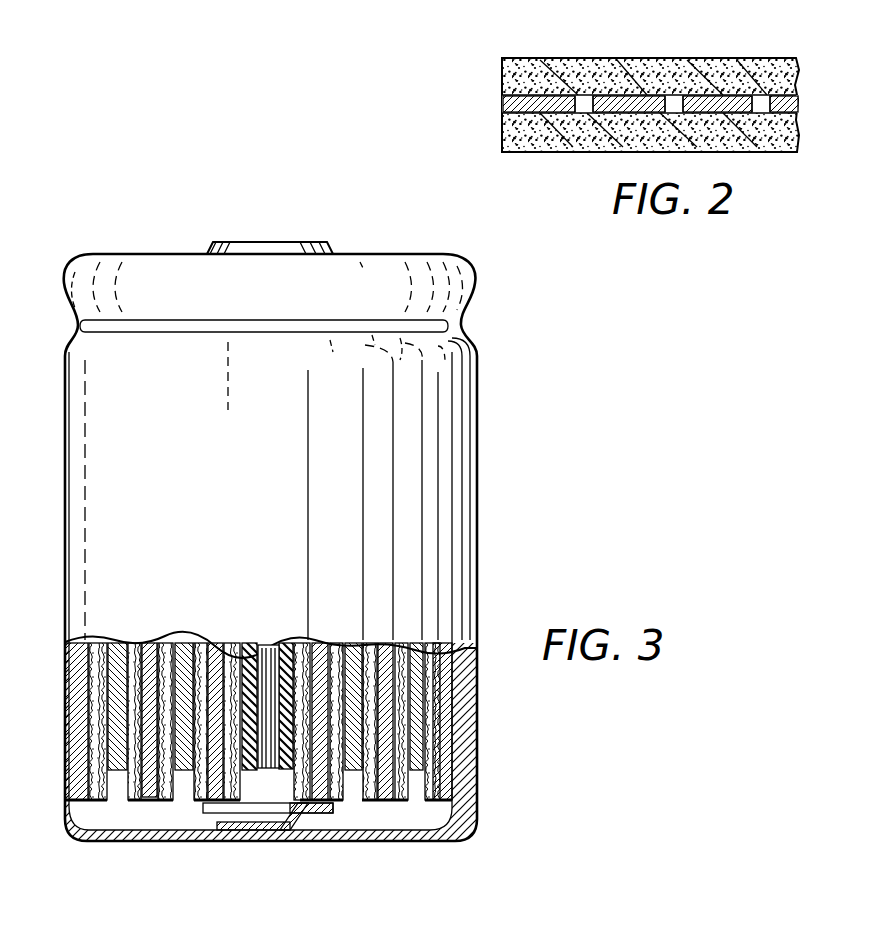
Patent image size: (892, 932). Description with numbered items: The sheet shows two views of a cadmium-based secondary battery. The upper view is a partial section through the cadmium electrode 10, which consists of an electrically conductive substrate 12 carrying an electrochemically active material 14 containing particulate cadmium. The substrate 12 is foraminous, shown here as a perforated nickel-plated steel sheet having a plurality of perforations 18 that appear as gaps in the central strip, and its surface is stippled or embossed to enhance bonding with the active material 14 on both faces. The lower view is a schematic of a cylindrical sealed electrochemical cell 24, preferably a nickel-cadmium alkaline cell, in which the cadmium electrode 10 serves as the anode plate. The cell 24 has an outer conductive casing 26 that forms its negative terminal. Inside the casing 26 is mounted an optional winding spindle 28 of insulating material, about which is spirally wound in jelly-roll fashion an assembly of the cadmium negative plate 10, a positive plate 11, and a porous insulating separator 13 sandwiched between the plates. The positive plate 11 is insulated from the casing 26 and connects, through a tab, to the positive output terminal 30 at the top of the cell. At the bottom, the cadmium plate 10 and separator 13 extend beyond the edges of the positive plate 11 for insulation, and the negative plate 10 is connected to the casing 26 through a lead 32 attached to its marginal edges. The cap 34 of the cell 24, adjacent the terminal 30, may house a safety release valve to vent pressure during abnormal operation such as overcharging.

In FIG. 3, the cadmium electrode 10 is at (320, 642).
In FIG. 3, the positive plate 11 is at (121, 636).
In FIG. 2, the electrically conductive substrate 12 is at (797, 88).
In FIG. 3, the porous insulating separator 13 is at (232, 641).
In FIG. 2, the electrochemically active material 14 is at (662, 78).
In FIG. 2, the perforations 18 is at (773, 104).
In FIG. 3, the cell 24 is at (523, 468).
In FIG. 3, the outer conductive casing 26 is at (456, 393).
In FIG. 3, the winding spindle 28 is at (251, 642).
In FIG. 3, the positive output terminal 30 is at (268, 242).
In FIG. 3, the lead 32 is at (268, 828).
In FIG. 3, the cap 34 is at (380, 252).